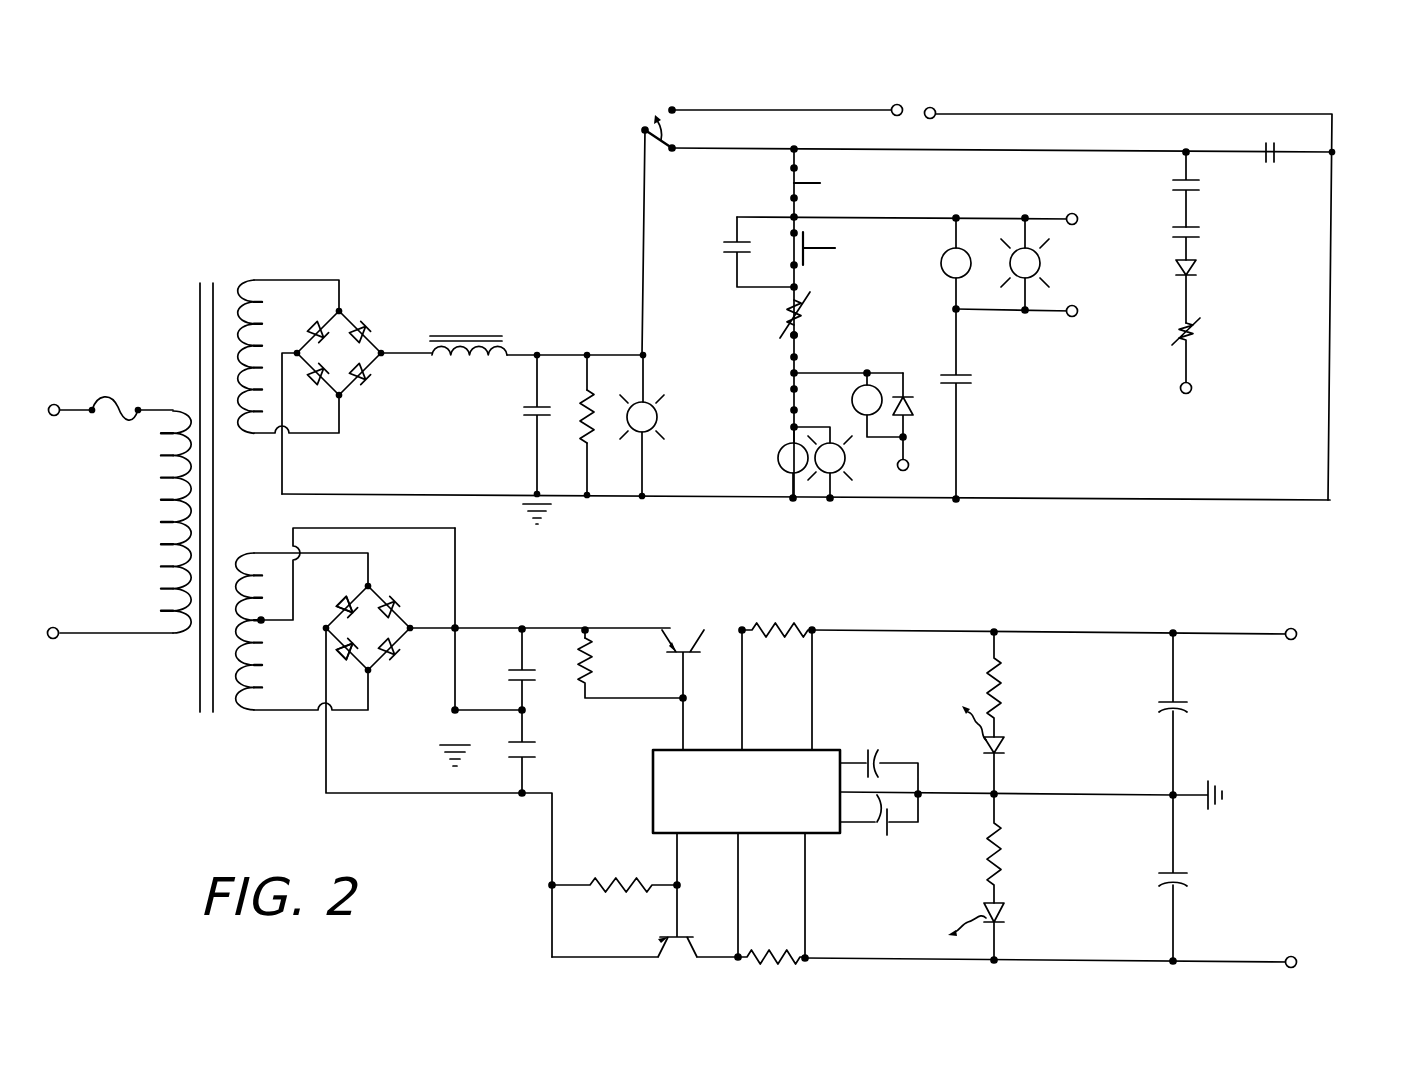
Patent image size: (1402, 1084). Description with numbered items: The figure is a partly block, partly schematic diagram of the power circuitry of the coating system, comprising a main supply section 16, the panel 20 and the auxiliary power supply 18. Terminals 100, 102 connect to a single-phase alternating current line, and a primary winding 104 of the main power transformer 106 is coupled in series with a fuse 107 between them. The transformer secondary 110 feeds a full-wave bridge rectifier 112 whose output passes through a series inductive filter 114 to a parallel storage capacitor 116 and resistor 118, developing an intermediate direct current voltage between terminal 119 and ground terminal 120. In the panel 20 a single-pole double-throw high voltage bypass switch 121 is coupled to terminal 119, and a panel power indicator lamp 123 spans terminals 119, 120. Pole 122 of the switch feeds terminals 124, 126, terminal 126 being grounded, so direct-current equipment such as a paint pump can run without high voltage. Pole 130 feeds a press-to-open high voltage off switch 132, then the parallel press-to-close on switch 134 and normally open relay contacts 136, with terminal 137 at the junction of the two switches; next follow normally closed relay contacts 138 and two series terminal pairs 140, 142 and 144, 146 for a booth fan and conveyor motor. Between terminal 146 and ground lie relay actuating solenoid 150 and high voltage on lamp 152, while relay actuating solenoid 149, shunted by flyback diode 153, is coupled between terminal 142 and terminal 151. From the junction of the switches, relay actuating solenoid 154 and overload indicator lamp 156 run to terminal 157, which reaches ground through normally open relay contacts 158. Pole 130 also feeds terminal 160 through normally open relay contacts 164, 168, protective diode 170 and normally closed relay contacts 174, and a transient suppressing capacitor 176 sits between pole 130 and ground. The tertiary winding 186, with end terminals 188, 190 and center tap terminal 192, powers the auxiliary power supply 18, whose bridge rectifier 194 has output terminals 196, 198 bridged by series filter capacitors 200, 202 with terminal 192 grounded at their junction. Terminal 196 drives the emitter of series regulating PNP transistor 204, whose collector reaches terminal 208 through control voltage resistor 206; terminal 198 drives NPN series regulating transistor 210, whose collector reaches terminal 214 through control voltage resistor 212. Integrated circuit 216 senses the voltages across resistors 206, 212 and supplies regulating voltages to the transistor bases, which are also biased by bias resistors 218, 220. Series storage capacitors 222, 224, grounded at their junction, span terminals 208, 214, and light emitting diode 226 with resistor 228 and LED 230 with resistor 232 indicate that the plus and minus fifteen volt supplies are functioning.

The main power supply section 16 is at (366, 247).
The auxiliary power supply 18 is at (603, 580).
The panel 20 is at (1340, 345).
The terminal 100 is at (57, 404).
The terminal 102 is at (57, 627).
The primary winding 104 is at (134, 532).
The main power transformer 106 is at (230, 766).
The fuse 107 is at (131, 405).
The secondary 110 is at (313, 228).
The full-wave bridge rectifier 112 is at (358, 306).
The series inductive filter 114 is at (468, 362).
The storage capacitor 116 is at (524, 412).
The resistor 118 is at (580, 400).
The terminal 119 is at (612, 352).
The terminal 120 is at (606, 497).
The high voltage bypass switch 121 is at (640, 127).
The pole 122 is at (672, 108).
The panel power indicator lamp 123 is at (660, 420).
The terminal 124 is at (893, 105).
The terminal 126 is at (933, 108).
The pole 130 is at (670, 152).
The high voltage off switch 132 is at (836, 183).
The high voltage on switch 134 is at (822, 266).
The relay contacts 136 is at (728, 246).
The terminal 137 is at (1082, 196).
The relay contacts 138 is at (814, 318).
The terminal 140 is at (790, 335).
The terminal 142 is at (790, 357).
The terminal 144 is at (790, 374).
The terminal 146 is at (790, 390).
The relay actuating solenoid 149 is at (856, 414).
The relay actuating solenoid 150 is at (778, 456).
The terminal 151 is at (908, 470).
The high voltage on lamp 152 is at (832, 475).
The flyback diode 153 is at (915, 388).
The relay actuating solenoid 154 is at (944, 270).
The overload indicator lamp 156 is at (1043, 262).
The terminal 157 is at (1080, 315).
The relay contacts 158 is at (972, 380).
The terminal 160 is at (1180, 392).
The relay contacts 164 is at (1195, 186).
The relay contacts 168 is at (1195, 232).
The protective diode 170 is at (1195, 270).
The relay contacts 174 is at (1195, 332).
The transient suppressing capacitor 176 is at (1264, 139).
The tertiary winding 186 is at (246, 720).
The end terminal 188 is at (370, 585).
The end terminal 190 is at (368, 672).
The center tap terminal 192 is at (264, 624).
The full-wave bridge rectifier 194 is at (418, 590).
The output terminal 196 is at (413, 627).
The output terminal 198 is at (355, 800).
The filter capacitor 200 is at (518, 673).
The filter capacitor 202 is at (520, 748).
The series regulating PNP transistor 204 is at (684, 632).
The control voltage resistor 206 is at (780, 630).
The terminal 208 is at (1291, 628).
The NPN series regulating transistor 210 is at (678, 960).
The control voltage resistor 212 is at (773, 965).
The terminal 214 is at (1291, 956).
The integrated circuit 216 is at (825, 745).
The bias resistor 218 is at (592, 672).
The bias resistor 220 is at (620, 880).
The storage capacitor 222 is at (1190, 706).
The storage capacitor 224 is at (1188, 880).
The light emitting diode 226 is at (1006, 746).
The resistor 228 is at (1002, 698).
The LED 230 is at (1006, 907).
The resistor 232 is at (1002, 880).